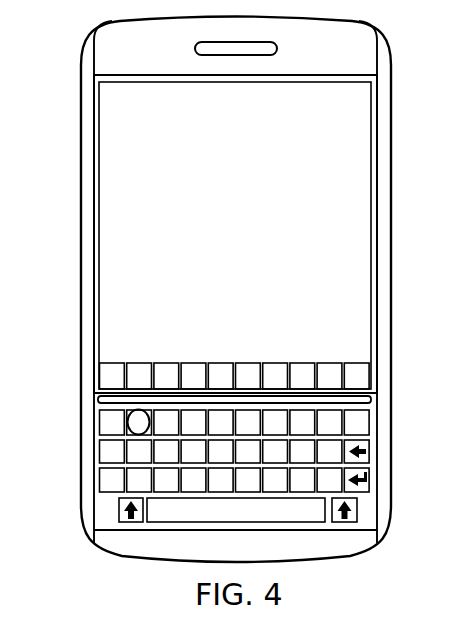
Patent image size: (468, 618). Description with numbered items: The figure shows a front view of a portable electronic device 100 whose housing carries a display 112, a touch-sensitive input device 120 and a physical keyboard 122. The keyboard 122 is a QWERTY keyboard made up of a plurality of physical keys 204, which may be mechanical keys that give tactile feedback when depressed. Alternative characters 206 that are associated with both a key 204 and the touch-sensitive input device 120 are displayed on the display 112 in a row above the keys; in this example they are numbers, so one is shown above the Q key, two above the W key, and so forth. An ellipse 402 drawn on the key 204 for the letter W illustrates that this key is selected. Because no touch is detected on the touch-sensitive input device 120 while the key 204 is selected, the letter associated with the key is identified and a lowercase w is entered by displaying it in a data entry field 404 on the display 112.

The electronic device 100 is at (115, 583).
The display 112 is at (356, 289).
The touch-sensitive input device 120 is at (372, 400).
The keyboard 122 is at (366, 480).
The keys 204 is at (237, 442).
The characters 206 is at (357, 363).
The ellipse 402 is at (129, 412).
The data entry field 404 is at (111, 97).